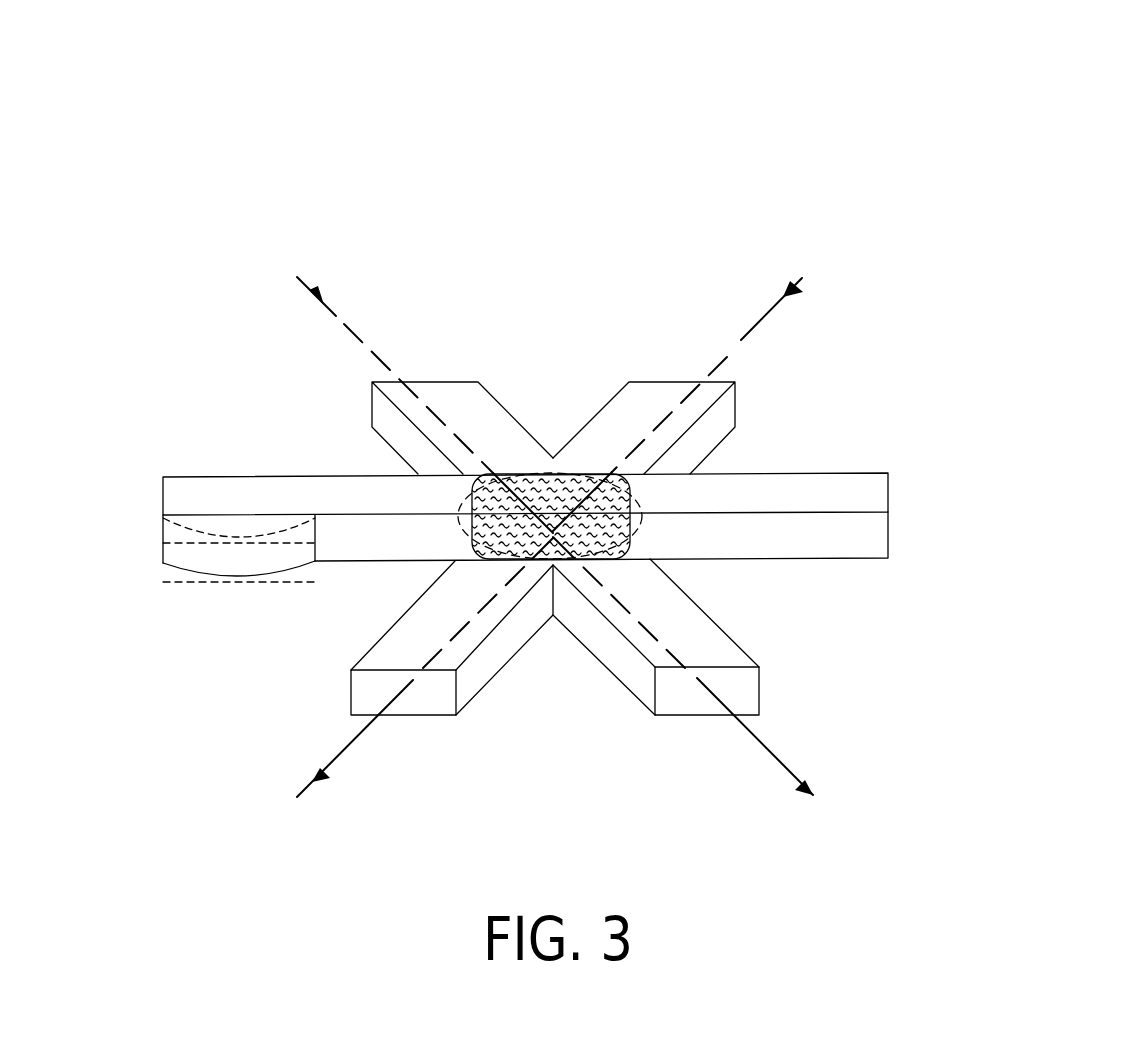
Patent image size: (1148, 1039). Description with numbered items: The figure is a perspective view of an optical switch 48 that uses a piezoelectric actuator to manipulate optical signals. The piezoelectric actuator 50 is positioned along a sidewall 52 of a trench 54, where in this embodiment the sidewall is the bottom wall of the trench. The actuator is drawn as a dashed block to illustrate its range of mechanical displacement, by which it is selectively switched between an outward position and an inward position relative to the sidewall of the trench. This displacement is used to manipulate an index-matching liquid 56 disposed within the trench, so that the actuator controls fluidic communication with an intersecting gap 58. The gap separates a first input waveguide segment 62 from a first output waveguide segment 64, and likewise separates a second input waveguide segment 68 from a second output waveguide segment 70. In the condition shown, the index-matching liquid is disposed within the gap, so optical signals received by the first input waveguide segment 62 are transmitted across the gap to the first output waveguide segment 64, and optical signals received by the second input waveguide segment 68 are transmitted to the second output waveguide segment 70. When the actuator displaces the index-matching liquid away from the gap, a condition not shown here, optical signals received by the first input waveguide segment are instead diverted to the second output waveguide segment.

The optical switch 48 is at (787, 70).
The piezoelectric actuator 50 is at (165, 578).
The sidewall 52 is at (385, 540).
The trench 54 is at (163, 497).
The index-matching liquid 56 is at (512, 537).
The intersecting gap 58 is at (553, 512).
The first input waveguide segment 62 is at (357, 700).
The first output waveguide segment 64 is at (727, 415).
The second input waveguide segment 68 is at (380, 417).
The second output waveguide segment 70 is at (750, 697).